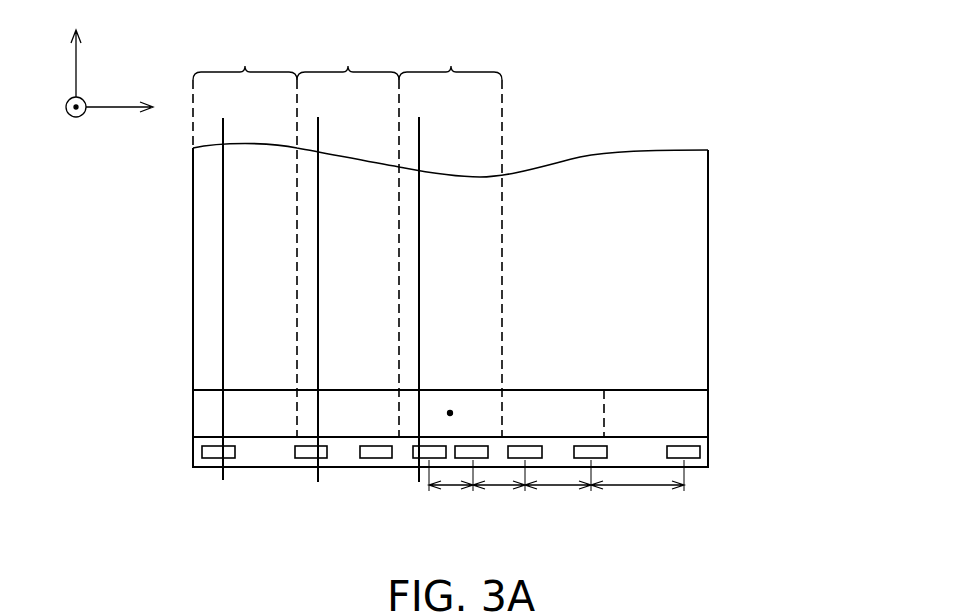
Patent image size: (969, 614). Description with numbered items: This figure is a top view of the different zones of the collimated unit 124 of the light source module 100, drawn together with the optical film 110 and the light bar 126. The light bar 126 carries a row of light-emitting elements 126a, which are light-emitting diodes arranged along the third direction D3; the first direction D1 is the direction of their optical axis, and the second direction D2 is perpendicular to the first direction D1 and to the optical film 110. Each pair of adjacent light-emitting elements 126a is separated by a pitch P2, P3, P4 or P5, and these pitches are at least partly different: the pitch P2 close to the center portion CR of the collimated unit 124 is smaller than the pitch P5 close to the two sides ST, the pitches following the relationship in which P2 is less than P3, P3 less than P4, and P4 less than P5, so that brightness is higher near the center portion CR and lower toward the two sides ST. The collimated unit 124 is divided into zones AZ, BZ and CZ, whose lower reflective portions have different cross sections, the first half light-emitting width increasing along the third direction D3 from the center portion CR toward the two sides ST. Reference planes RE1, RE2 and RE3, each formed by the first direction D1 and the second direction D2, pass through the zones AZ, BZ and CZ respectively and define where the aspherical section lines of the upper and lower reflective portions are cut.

The light source module 100 is at (830, 554).
The optical film 110 is at (666, 238).
The collimated unit 124 is at (687, 429).
The light bar 126 is at (708, 449).
The light-emitting elements 126a is at (300, 460).
The two sides ST is at (696, 417).
The center portion CR is at (454, 389).
The reference plane RE1 is at (420, 140).
The reference plane RE2 is at (319, 140).
The reference plane RE3 is at (224, 140).
The zone AZ is at (450, 238).
The zone BZ is at (348, 238).
The zone CZ is at (245, 238).
The pitch P2 is at (451, 493).
The pitch P3 is at (499, 493).
The pitch P4 is at (558, 493).
The pitch P5 is at (637, 493).
The first direction D1 is at (74, 49).
The second direction D2 is at (63, 121).
The third direction D3 is at (137, 108).